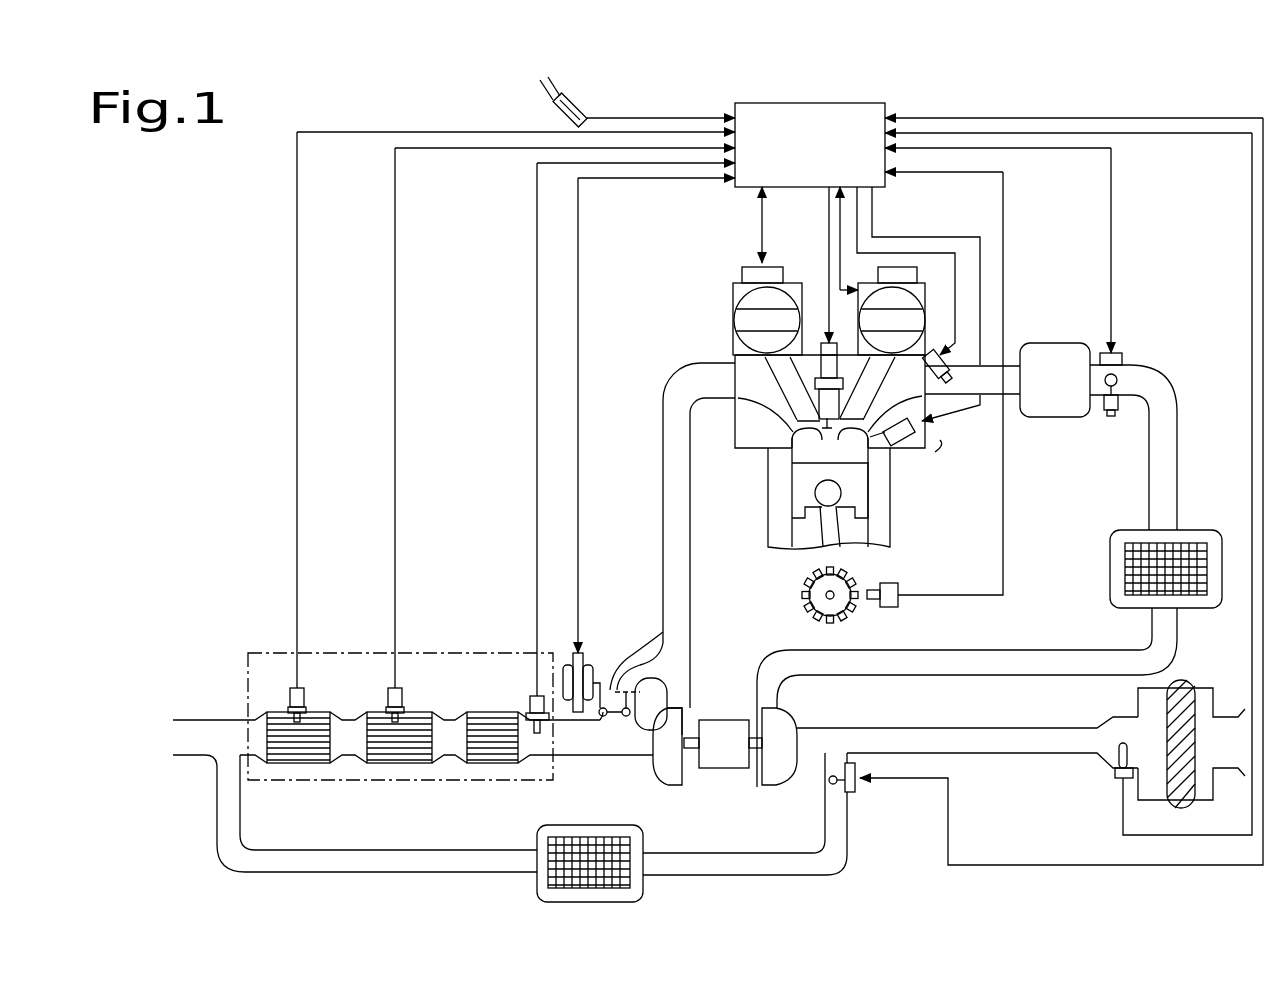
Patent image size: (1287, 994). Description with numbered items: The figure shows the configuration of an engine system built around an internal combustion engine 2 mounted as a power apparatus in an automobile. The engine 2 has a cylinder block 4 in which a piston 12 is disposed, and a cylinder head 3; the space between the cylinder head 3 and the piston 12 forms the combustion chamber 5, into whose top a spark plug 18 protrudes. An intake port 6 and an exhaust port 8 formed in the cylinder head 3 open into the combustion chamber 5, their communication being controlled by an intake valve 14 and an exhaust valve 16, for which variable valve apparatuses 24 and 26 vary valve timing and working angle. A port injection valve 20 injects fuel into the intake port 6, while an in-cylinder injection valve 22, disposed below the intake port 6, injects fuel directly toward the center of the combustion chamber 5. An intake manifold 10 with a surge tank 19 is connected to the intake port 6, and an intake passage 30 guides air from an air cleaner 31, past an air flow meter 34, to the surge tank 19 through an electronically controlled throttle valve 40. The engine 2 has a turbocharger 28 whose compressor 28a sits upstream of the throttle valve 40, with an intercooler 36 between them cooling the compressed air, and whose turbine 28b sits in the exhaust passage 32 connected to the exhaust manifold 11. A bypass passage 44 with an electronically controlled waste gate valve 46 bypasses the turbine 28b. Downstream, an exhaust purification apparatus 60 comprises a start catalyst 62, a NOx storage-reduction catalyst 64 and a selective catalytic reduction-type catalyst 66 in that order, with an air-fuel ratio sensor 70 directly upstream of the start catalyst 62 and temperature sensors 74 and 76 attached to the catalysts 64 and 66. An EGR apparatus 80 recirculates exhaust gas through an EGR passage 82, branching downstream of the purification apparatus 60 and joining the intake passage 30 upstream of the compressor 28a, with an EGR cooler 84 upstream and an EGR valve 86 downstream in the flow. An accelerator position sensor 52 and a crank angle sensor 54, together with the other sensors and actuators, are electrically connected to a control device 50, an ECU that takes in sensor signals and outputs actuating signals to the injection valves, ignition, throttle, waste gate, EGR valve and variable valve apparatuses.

The internal combustion engine 2 is at (712, 293).
The cylinder head 3 is at (735, 440).
The cylinder block 4 is at (768, 535).
The combustion chamber 5 is at (830, 442).
The intake port 6 is at (895, 432).
The exhaust port 8 is at (765, 398).
The intake manifold 10 is at (987, 396).
The exhaust manifold 11 is at (675, 412).
The piston 12 is at (795, 505).
The intake valve 14 is at (875, 450).
The exhaust valve 16 is at (797, 445).
The spark plug 18 is at (820, 345).
The surge tank 19 is at (1050, 417).
The port injection valve 20 is at (948, 375).
The in-cylinder injection valve 22 is at (935, 450).
The variable valve apparatus 24 is at (925, 285).
The variable valve apparatus 26 is at (733, 322).
The turbocharger 28 is at (728, 710).
The compressor 28a is at (800, 735).
The turbine 28b is at (666, 770).
The intake passage 30 is at (1178, 428).
The air cleaner 31 is at (1187, 682).
The exhaust passage 32 is at (454, 604).
The air flow meter 34 is at (1116, 776).
The intercooler 36 is at (1110, 582).
The throttle valve 40 is at (1122, 375).
The bypass passage 44 is at (636, 656).
The waste gate valve 46 is at (614, 692).
The control device 50 is at (870, 103).
The accelerator position sensor 52 is at (585, 104).
The crank angle sensor 54 is at (898, 595).
The exhaust purification apparatus 60 is at (408, 653).
The start catalyst 62 is at (479, 712).
The NOx storage-reduction catalyst 64 is at (412, 712).
The selective catalytic reduction-type catalyst 66 is at (322, 712).
The air-fuel ratio sensor 70 is at (530, 700).
The temperature sensor 74 is at (388, 695).
The temperature sensor 76 is at (290, 695).
The EGR apparatus 80 is at (850, 878).
The EGR passage 82 is at (486, 850).
The EGR cooler 84 is at (572, 826).
The EGR valve 86 is at (850, 792).